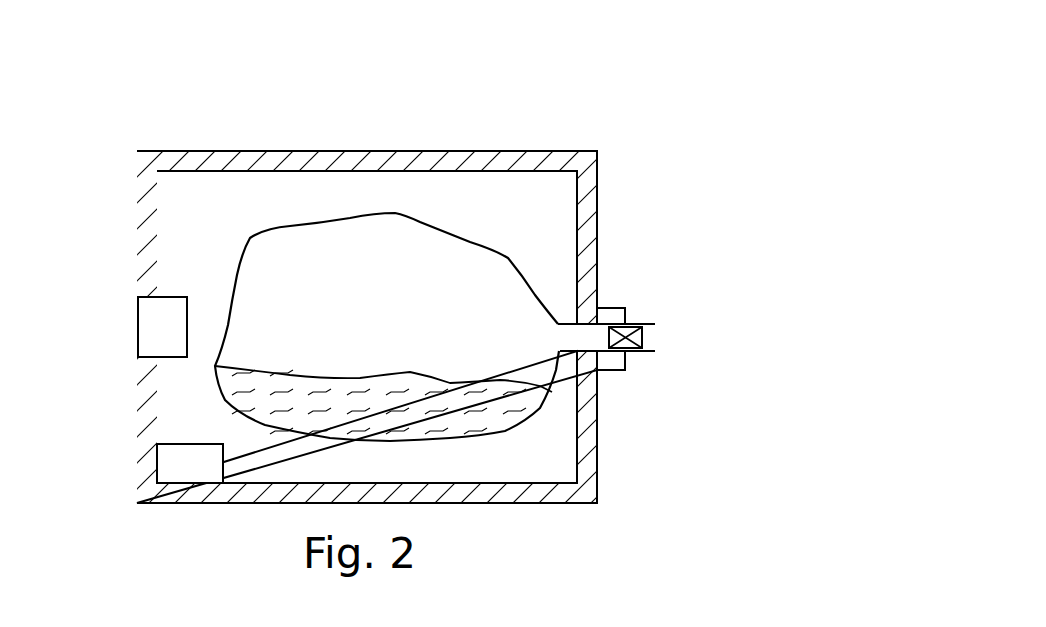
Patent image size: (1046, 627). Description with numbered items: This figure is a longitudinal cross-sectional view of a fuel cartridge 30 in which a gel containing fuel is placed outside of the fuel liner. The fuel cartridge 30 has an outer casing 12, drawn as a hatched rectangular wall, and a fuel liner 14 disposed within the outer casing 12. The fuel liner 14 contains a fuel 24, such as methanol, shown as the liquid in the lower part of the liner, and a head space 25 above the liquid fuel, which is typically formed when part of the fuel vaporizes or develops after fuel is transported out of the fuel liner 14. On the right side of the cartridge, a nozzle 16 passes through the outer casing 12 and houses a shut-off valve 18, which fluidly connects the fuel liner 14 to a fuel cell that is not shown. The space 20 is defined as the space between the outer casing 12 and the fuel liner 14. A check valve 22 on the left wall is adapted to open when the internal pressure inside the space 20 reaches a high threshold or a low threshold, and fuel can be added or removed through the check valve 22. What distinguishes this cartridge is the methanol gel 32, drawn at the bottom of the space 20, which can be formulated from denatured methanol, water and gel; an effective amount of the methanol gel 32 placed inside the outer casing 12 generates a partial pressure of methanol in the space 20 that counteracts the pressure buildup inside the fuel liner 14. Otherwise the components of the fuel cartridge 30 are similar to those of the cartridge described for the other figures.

The fuel cartridge 30 is at (577, 114).
The outer casing 12 is at (332, 158).
The space 20 is at (197, 219).
The fuel liner 14 is at (397, 213).
The head space 25 is at (478, 258).
The fuel 24 is at (530, 400).
The check valve 22 is at (152, 327).
The methanol gel 32 is at (195, 470).
The nozzle 16 is at (612, 307).
The shut-off valve 18 is at (630, 351).